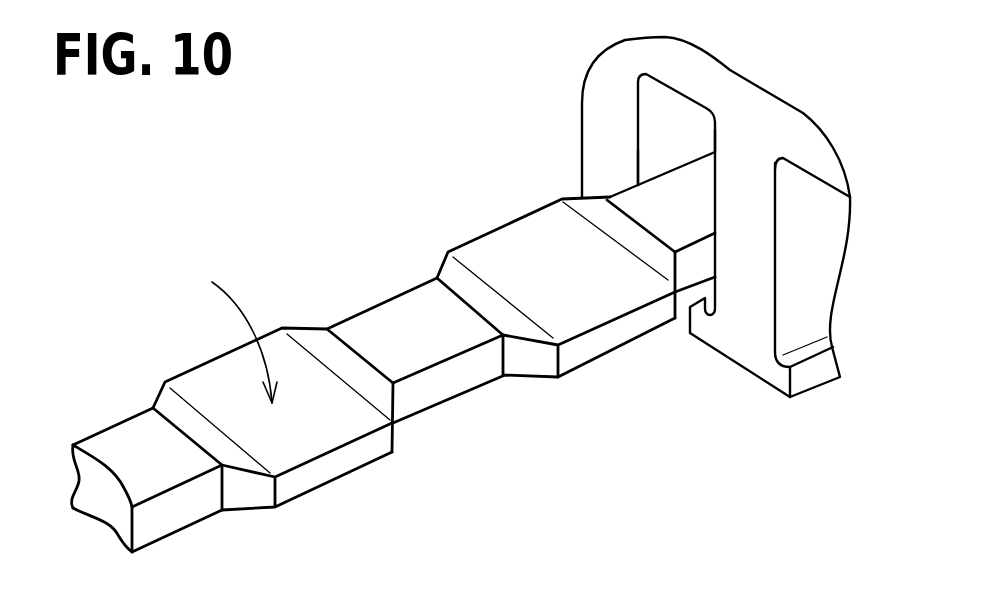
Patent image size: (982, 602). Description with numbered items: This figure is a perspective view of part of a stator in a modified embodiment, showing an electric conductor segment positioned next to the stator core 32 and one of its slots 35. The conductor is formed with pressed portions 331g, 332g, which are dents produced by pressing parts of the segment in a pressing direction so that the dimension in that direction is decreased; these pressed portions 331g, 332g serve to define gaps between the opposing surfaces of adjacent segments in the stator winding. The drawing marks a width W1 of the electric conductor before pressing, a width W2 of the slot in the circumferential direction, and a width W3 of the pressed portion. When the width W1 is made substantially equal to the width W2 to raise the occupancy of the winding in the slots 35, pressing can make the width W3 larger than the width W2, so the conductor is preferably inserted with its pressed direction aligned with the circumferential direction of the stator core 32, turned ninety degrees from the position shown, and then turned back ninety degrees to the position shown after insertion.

The stator core 32 is at (768, 115).
The slot 35 is at (660, 99).
The pressed portion 331g is at (328, 437).
The pressed portion 332g is at (360, 424).
The width of the electric conductor before pressing W1 is at (448, 357).
The width of the slot W2 is at (715, 163).
The width of the pressed portion W3 is at (618, 317).